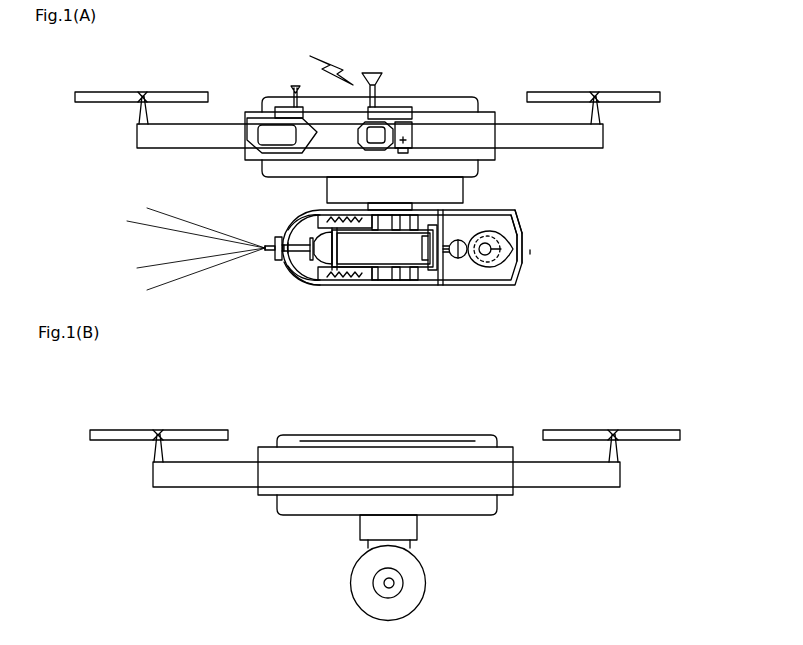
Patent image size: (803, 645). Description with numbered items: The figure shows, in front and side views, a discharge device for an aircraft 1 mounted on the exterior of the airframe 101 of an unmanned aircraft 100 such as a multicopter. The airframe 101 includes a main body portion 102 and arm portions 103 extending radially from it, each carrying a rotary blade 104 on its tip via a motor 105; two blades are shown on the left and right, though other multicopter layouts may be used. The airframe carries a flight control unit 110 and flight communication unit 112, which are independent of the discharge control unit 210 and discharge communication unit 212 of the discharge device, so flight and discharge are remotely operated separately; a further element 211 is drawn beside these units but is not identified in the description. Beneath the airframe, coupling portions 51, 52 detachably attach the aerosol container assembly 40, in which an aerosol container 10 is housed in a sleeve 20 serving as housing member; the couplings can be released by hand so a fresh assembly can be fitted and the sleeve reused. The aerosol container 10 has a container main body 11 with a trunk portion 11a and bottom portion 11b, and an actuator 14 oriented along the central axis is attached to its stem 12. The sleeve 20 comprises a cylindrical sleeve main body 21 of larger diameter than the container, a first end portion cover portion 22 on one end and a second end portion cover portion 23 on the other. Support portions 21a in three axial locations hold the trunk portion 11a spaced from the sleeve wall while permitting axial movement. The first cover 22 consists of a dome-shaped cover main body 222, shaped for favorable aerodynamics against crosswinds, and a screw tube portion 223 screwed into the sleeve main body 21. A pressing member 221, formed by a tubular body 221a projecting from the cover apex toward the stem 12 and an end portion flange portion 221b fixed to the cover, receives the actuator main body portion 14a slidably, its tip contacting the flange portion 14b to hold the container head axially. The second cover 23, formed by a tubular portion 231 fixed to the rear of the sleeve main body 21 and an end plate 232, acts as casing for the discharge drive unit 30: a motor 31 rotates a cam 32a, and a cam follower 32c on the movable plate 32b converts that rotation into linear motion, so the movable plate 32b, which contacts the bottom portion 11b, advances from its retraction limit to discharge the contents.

In FIG. 1A, the discharge device for an aircraft 1 is at (378, 279).
In FIG. 1A, the aircraft 100 is at (468, 92).
In FIG. 1B, the aircraft 100 is at (477, 428).
In FIG. 1A, the airframe 101 is at (397, 106).
In FIG. 1B, the airframe 101 is at (409, 435).
In FIG. 1A, the main body portion 102 is at (480, 167).
In FIG. 1A, the arm portion 103 is at (172, 150).
In FIG. 1B, the arm portion 103 is at (204, 488).
In FIG. 1A, the rotary blade 104 is at (116, 88).
In FIG. 1B, the rotary blade 104 is at (133, 428).
In FIG. 1A, the motor 105 is at (137, 118).
In FIG. 1B, the motor 105 is at (153, 453).
In FIG. 1A, the flight control unit 110 is at (262, 117).
In FIG. 1A, the flight communication unit 112 is at (285, 107).
In FIG. 1A, the discharge control unit 210 is at (390, 121).
In FIG. 1A, the battery 211 is at (415, 137).
In FIG. 1A, the discharge communication unit 212 is at (390, 106).
In FIG. 1A, the coupling portion 51 is at (464, 189).
In FIG. 1B, the coupling portion 51 is at (415, 525).
In FIG. 1A, the coupling portion 52 is at (413, 204).
In FIG. 1B, the coupling portion 52 is at (410, 543).
In FIG. 1A, the aerosol container assembly 40 is at (378, 279).
In FIG. 1B, the aerosol container assembly 40 is at (380, 596).
In FIG. 1A, the sleeve 20 is at (423, 287).
In FIG. 1B, the sleeve 20 is at (417, 611).
In FIG. 1A, the aerosol container 10 is at (357, 271).
In FIG. 1A, the container main body 11 is at (368, 281).
In FIG. 1A, the trunk portion 11a is at (390, 281).
In FIG. 1A, the bottom portion 11b is at (433, 262).
In FIG. 1A, the stem 12 is at (290, 286).
In FIG. 1B, the stem 12 is at (385, 585).
In FIG. 1A, the actuator 14 is at (267, 243).
In FIG. 1A, the actuator main body portion 14a is at (308, 262).
In FIG. 1A, the flange portion 14b is at (291, 237).
In FIG. 1A, the sleeve main body 21 is at (345, 284).
In FIG. 1A, the support portion 21a is at (385, 273).
In FIG. 1A, the first end portion cover portion 22 is at (300, 283).
In FIG. 1A, the pressing member 221 is at (290, 228).
In FIG. 1A, the tubular body 221a is at (288, 272).
In FIG. 1A, the end portion flange portion 221b is at (281, 262).
In FIG. 1A, the cover main body 222 is at (287, 217).
In FIG. 1A, the screw tube portion 223 is at (333, 283).
In FIG. 1A, the second end portion cover portion 23 is at (526, 237).
In FIG. 1A, the tubular portion 231 is at (483, 263).
In FIG. 1A, the end plate 232 is at (520, 225).
In FIG. 1A, the discharge drive unit 30 is at (511, 259).
In FIG. 1A, the motor 31 is at (530, 252).
In FIG. 1A, the cam 32a is at (500, 262).
In FIG. 1A, the movable plate 32b is at (443, 258).
In FIG. 1A, the cam follower 32c is at (465, 258).